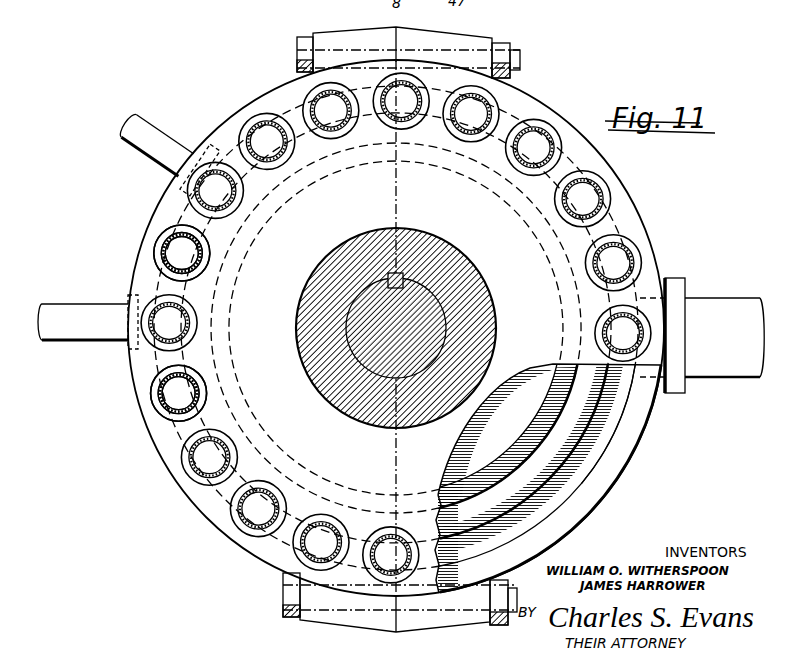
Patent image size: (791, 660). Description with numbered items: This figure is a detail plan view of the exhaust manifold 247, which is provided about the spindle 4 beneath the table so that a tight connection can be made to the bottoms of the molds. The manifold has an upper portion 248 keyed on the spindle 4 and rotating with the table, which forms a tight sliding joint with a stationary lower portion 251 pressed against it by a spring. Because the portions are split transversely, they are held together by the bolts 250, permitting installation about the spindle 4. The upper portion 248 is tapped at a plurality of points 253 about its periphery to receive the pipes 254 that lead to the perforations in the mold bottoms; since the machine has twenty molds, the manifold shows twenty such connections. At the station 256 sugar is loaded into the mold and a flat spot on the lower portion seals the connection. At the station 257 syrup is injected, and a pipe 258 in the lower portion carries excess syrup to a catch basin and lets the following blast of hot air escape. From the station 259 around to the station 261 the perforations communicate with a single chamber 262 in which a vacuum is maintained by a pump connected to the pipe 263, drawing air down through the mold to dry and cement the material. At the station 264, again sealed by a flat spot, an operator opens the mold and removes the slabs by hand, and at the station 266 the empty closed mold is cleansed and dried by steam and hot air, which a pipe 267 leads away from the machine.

The spindle 4 is at (385, 362).
The manifold 247 is at (550, 105).
The upper portion 248 is at (345, 221).
The bolts 250 is at (298, 52).
The lower portion 251 is at (640, 426).
The tapped points 253 is at (603, 195).
The pipes 254 is at (619, 266).
The station 256 is at (168, 250).
The station 257 is at (205, 186).
The pipe 258 is at (190, 147).
The station 259 is at (260, 132).
The station 261 is at (206, 460).
The chamber 262 is at (588, 470).
The pipe 263 is at (713, 307).
The station 264 is at (176, 392).
The station 266 is at (166, 328).
The pipe 267 is at (85, 331).